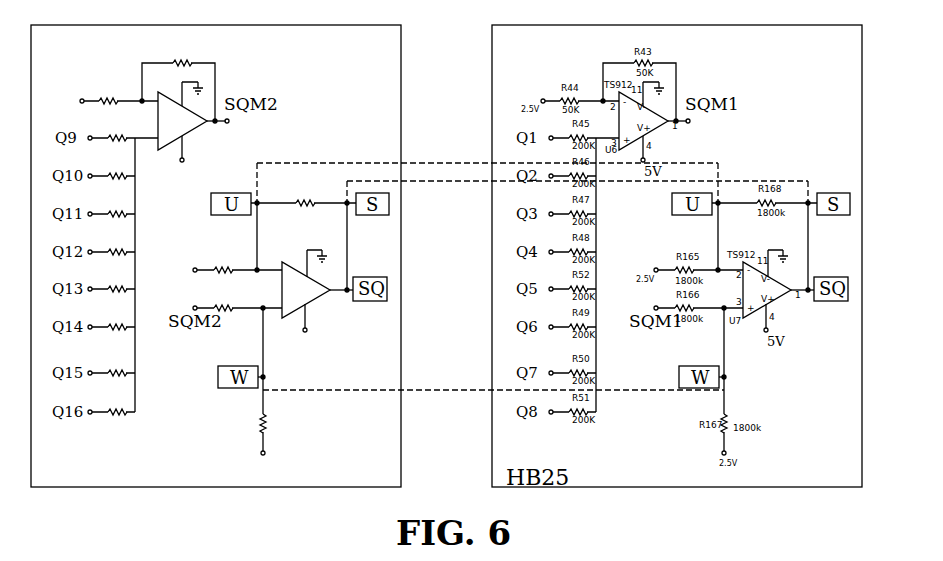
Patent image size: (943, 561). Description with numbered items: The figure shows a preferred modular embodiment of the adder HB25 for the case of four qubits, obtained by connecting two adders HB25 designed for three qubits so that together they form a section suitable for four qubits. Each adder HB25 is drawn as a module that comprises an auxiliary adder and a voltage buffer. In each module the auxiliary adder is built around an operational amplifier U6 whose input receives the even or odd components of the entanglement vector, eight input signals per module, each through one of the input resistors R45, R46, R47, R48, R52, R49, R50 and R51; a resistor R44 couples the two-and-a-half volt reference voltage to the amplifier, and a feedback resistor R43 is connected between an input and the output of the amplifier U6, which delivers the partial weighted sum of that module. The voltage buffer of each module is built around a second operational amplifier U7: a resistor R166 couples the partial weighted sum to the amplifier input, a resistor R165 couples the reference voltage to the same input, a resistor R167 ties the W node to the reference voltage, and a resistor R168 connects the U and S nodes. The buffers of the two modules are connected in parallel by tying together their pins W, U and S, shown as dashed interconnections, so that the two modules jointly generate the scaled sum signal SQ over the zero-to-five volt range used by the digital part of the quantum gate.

The adder HB25 is at (216, 257).
The operational amplifier TS912 (summing/inverting stage) U6 is at (185, 129).
The operational amplifier TS912 (comparator stage) U7 is at (309, 299).
The feedback resistor 50K R43 is at (178, 85).
The input resistor 50K from 2.5V reference R44 is at (109, 99).
The input resistor 200K R45 is at (111, 135).
The input resistor 200K R46 is at (111, 173).
The input resistor 200K R47 is at (111, 211).
The input resistor 200K R48 is at (111, 249).
The input resistor 200K R52 is at (111, 286).
The input resistor 200K R49 is at (111, 324).
The input resistor 200K R50 is at (111, 370).
The input resistor 200K R51 is at (111, 409).
The resistor 1800k from 2.5V reference R165 is at (228, 269).
The resistor 1800k from SQM input R166 is at (237, 307).
The resistor 1800k to 2.5V R167 is at (269, 441).
The resistor 1800k between U and S nodes R168 is at (303, 201).